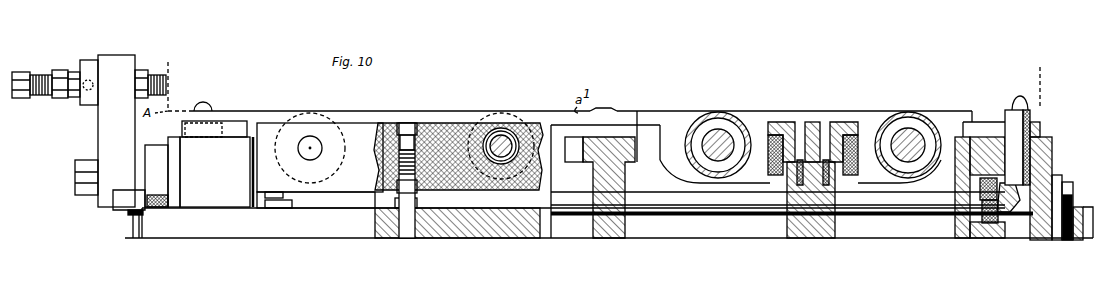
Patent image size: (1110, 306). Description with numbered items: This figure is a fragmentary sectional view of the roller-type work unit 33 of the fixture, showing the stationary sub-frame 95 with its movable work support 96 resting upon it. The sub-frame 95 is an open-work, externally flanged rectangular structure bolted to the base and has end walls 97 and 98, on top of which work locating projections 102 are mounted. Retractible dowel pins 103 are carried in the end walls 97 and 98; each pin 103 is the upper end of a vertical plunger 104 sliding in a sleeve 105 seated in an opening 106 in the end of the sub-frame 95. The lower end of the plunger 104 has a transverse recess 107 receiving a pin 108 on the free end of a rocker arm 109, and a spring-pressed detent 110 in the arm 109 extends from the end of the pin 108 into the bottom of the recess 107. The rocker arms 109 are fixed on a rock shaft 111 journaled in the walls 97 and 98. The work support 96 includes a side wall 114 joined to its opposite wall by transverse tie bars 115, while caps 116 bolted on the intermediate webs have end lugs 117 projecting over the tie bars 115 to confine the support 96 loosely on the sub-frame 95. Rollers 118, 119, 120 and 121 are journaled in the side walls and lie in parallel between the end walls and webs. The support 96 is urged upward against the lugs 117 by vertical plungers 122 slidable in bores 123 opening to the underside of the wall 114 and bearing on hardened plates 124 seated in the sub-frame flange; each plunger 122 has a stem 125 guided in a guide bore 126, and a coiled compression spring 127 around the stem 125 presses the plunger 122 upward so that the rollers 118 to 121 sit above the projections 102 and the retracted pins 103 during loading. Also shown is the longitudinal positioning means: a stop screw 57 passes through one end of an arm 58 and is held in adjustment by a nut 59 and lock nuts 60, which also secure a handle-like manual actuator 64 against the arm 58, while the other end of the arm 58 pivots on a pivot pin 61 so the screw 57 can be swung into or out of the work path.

The rail 33 is at (660, 129).
The stop screw 57 is at (167, 80).
The arm 58 is at (123, 60).
The nut 59 is at (143, 70).
The lock nuts 60 is at (62, 70).
The pivot pin 61 is at (75, 175).
The manual actuator 64 is at (86, 105).
The sub-frame 95 is at (472, 230).
The work support 96 is at (458, 124).
The end wall 97 is at (180, 148).
The end wall 98 is at (1052, 161).
The work locating projections 102 is at (228, 120).
The retractible dowel pins 103 is at (205, 104).
The vertical plunger 104 is at (1030, 117).
The sleeve 105 is at (1042, 128).
The opening 106 is at (1052, 146).
The transverse notch or recess 107 is at (1005, 212).
The pin 108 is at (980, 186).
The rocker arm 109 is at (990, 223).
The spring-pressed detent 110 is at (975, 215).
The rock shaft 111 is at (896, 216).
The side wall 114 is at (338, 193).
The tie bars 115 is at (768, 163).
The caps 116 is at (812, 122).
The end lugs or flanges 117 is at (778, 122).
The roller 118 is at (330, 122).
The roller 119 is at (511, 125).
The roller 120 is at (726, 118).
The roller 121 is at (930, 122).
The vertical plungers 122 is at (268, 196).
The bores 123 is at (398, 190).
The hardened plates 124 is at (272, 208).
The stem 125 is at (400, 146).
The guide bore 126 is at (413, 133).
The coiled compression spring 127 is at (400, 162).